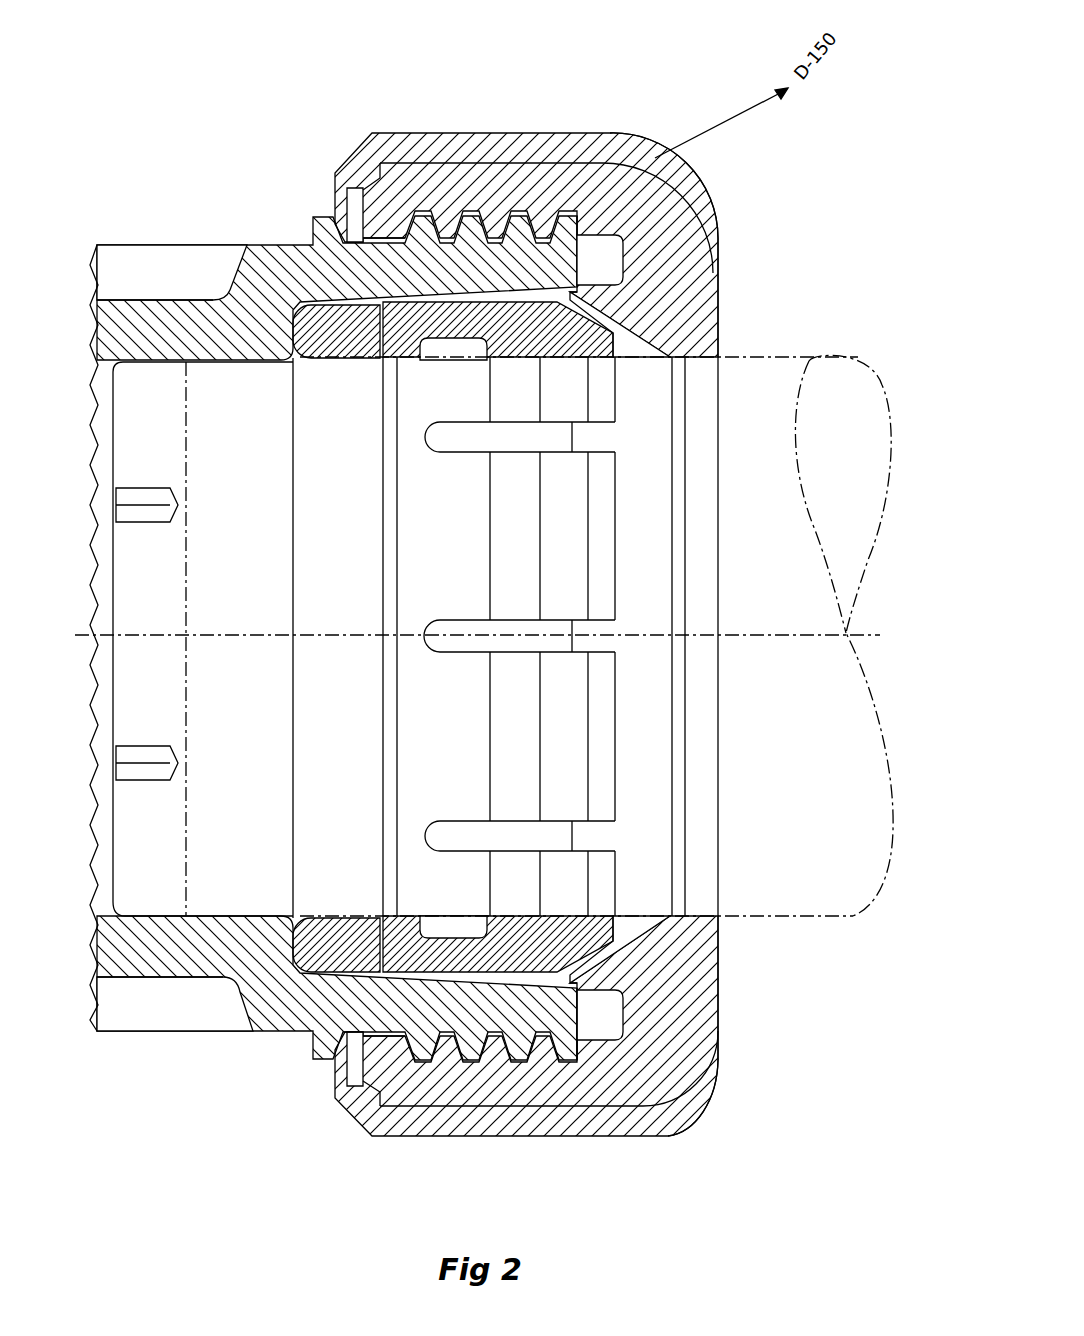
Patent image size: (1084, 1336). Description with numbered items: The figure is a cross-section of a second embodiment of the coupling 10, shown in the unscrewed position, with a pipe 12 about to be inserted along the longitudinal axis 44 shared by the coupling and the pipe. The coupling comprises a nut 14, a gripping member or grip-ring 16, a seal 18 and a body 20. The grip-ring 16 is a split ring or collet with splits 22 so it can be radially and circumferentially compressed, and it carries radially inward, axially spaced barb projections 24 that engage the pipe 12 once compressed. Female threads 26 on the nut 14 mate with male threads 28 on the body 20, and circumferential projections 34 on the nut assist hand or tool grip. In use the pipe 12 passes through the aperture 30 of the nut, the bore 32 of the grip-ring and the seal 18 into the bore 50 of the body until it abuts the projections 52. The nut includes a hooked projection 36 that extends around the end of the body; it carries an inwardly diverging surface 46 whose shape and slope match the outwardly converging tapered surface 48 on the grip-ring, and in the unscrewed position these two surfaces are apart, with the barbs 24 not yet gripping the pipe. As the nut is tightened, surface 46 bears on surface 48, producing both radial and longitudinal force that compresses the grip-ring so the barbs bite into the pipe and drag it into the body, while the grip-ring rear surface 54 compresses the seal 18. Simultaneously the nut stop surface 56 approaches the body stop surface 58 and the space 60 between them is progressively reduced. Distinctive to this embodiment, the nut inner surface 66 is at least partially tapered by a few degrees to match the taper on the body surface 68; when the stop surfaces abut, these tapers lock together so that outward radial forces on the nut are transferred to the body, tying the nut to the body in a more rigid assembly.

The coupling 10 is at (519, 90).
The pipe 12 is at (762, 372).
The nut 14 is at (592, 163).
The grip-ring 16 is at (335, 305).
The seal 18 is at (307, 268).
The body 20 is at (183, 320).
The splits 22 is at (481, 434).
The barb projections 24 is at (490, 360).
The female threads 26 is at (500, 216).
The male threads 28 is at (415, 212).
The aperture 30 is at (735, 667).
The bore 32 is at (648, 562).
The projections 34 is at (660, 155).
The hooked projection 36 is at (617, 287).
The longitudinal axis 44 is at (740, 634).
The inwardly diverging surface 46 is at (632, 358).
The outwardly converging tapered surface 48 is at (640, 328).
The bore 50 is at (240, 826).
The projections 52 is at (165, 745).
The rear surface 54 is at (357, 360).
The nut stop surface 56 is at (610, 1063).
The body stop surface 58 is at (628, 1000).
The space 60 is at (603, 256).
The nut inner surface 66 is at (623, 247).
The body surface 68 is at (543, 358).